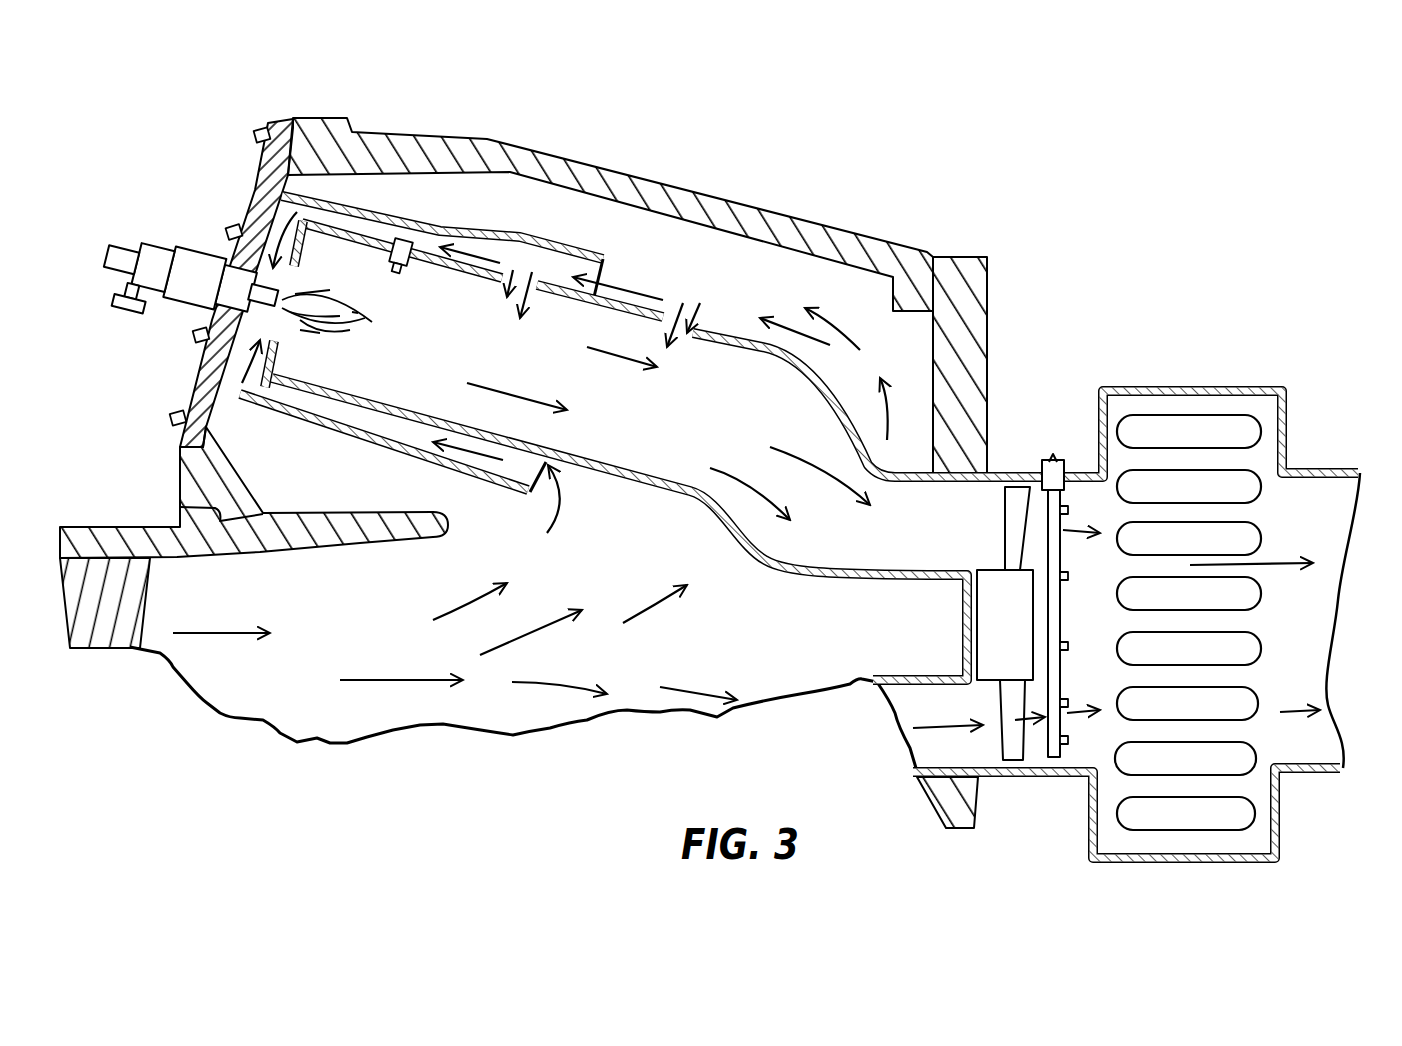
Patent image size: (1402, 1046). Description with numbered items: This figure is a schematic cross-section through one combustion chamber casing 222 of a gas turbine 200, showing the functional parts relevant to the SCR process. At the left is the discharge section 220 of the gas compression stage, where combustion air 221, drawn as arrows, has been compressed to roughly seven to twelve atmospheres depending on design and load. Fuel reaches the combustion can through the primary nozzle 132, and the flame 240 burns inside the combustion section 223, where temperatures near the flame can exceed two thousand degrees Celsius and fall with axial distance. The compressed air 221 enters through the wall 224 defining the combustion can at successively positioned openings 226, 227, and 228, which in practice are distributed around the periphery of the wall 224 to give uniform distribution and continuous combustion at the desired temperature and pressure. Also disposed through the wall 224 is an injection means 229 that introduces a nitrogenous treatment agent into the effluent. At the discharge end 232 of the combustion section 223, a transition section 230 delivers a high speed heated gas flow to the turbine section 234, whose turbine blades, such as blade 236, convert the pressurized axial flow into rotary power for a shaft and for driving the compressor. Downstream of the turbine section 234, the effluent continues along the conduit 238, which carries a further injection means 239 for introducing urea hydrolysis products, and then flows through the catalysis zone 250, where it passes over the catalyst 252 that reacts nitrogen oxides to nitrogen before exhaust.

The gas turbine 200 is at (313, 102).
The primary nozzle 132 is at (203, 270).
The combustion chamber casing 222 is at (188, 360).
The flame 240 is at (333, 307).
The injection means 229 is at (409, 274).
The combustion section 223 is at (495, 360).
The opening 226 is at (279, 332).
The wall 224 is at (362, 395).
The opening 227 is at (533, 287).
The opening 228 is at (693, 333).
The discharge end 232 is at (745, 442).
The transition section 230 is at (885, 543).
The turbine section 234 is at (985, 537).
The turbine blade 236 is at (1013, 500).
The conduit 238 is at (1113, 636).
The injection means 239 is at (1068, 678).
The exhaust duct 250 is at (1147, 385).
The catalyst 252 is at (1213, 430).
The discharge section of gas compression stage 220 is at (343, 627).
The combustion air 221 is at (563, 690).